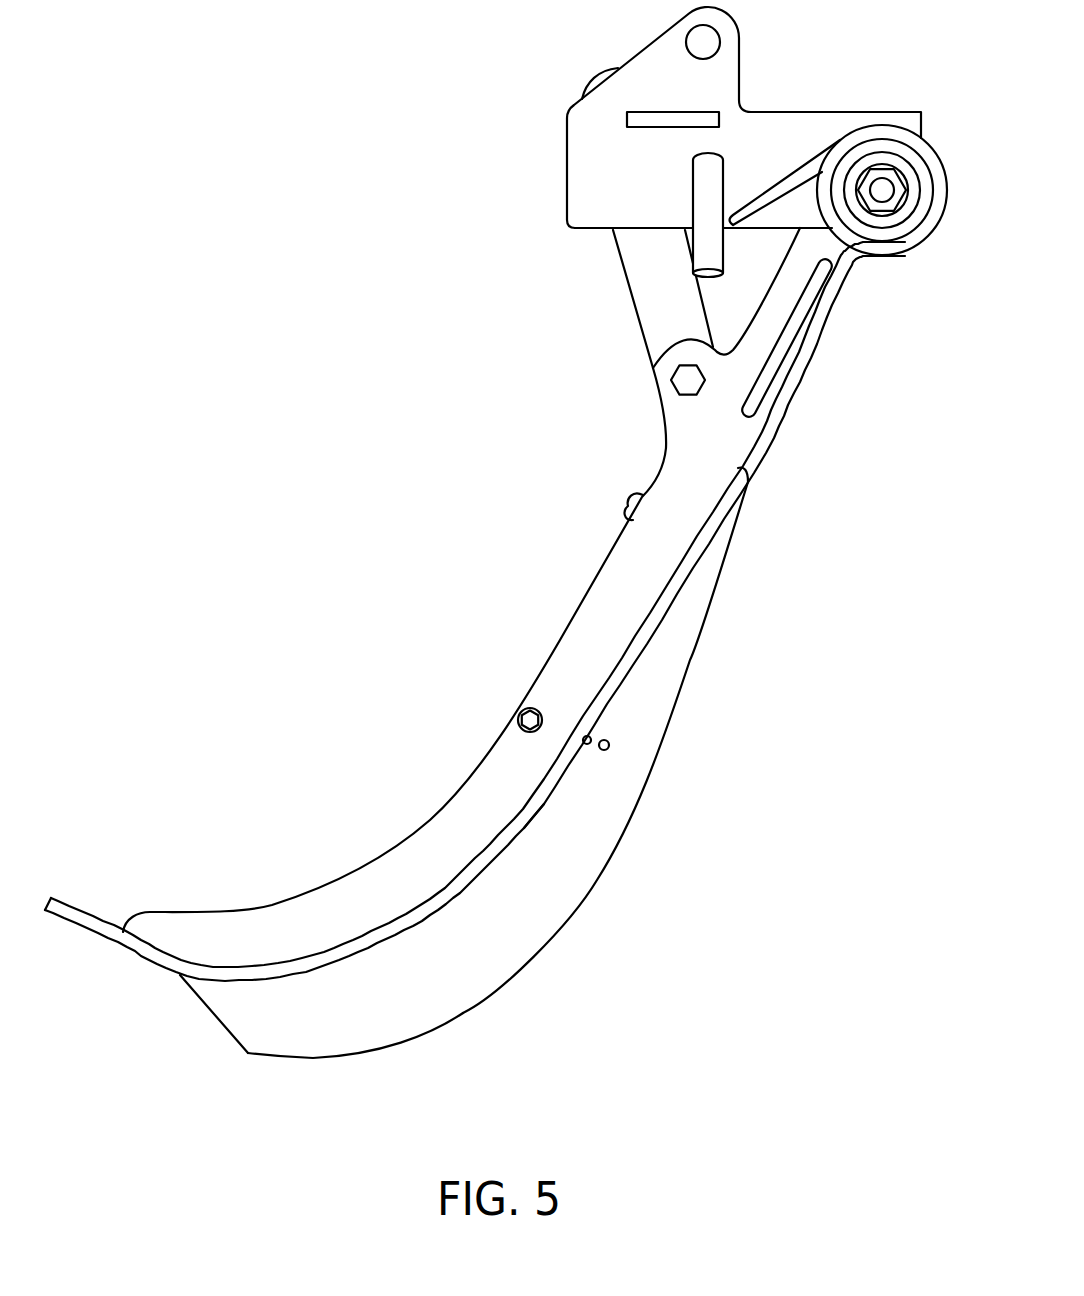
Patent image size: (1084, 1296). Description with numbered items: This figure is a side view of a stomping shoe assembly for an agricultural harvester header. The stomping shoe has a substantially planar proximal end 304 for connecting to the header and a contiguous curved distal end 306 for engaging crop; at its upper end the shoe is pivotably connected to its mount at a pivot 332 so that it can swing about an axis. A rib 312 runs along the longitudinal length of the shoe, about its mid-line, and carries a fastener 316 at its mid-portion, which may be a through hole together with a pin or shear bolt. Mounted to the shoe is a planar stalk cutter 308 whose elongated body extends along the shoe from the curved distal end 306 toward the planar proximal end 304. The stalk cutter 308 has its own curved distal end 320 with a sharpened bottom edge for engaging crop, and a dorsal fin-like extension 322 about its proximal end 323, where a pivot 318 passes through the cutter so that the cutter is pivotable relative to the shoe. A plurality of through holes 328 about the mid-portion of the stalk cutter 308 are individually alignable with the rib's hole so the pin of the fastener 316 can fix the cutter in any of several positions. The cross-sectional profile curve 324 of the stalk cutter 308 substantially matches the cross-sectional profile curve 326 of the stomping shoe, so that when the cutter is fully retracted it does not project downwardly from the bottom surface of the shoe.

The substantially planar proximal end 304 is at (670, 600).
The curved distal end 306 is at (100, 940).
The stalk cutter 308 is at (560, 934).
The rib 312 is at (580, 615).
The fastener 316 is at (520, 727).
The pivot 318 is at (683, 381).
The curved distal end 320 is at (310, 1042).
The dorsal fin-like extension 322 is at (633, 493).
The proximal end 323 is at (733, 512).
The cross-sectional profile curve 324 is at (462, 1013).
The cross-sectional profile curve 326 is at (527, 832).
The through holes 328 is at (590, 738).
The pivot 332 is at (882, 192).